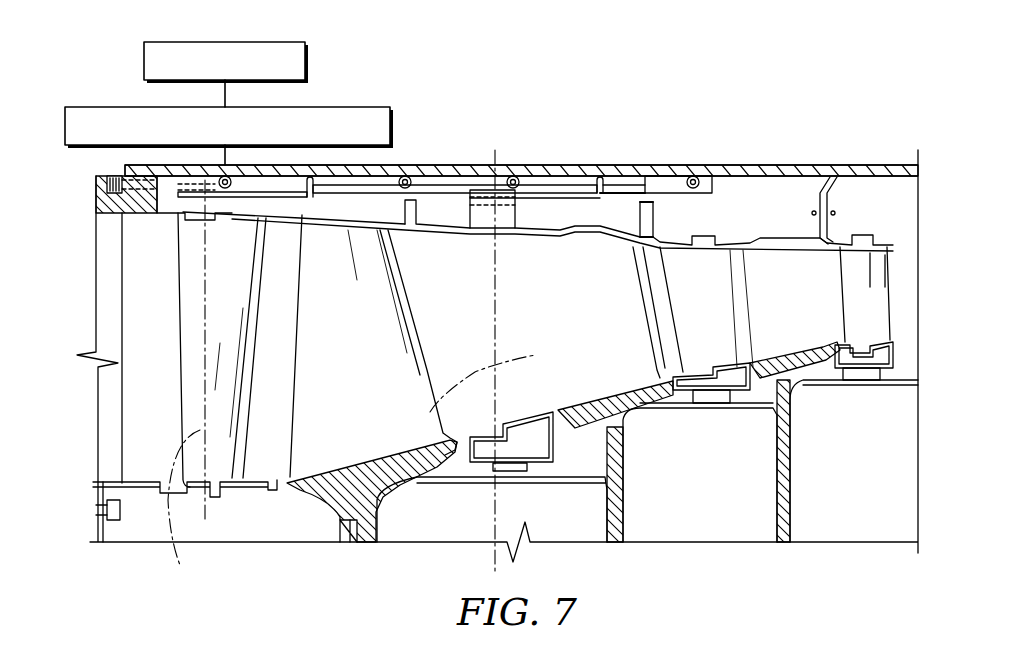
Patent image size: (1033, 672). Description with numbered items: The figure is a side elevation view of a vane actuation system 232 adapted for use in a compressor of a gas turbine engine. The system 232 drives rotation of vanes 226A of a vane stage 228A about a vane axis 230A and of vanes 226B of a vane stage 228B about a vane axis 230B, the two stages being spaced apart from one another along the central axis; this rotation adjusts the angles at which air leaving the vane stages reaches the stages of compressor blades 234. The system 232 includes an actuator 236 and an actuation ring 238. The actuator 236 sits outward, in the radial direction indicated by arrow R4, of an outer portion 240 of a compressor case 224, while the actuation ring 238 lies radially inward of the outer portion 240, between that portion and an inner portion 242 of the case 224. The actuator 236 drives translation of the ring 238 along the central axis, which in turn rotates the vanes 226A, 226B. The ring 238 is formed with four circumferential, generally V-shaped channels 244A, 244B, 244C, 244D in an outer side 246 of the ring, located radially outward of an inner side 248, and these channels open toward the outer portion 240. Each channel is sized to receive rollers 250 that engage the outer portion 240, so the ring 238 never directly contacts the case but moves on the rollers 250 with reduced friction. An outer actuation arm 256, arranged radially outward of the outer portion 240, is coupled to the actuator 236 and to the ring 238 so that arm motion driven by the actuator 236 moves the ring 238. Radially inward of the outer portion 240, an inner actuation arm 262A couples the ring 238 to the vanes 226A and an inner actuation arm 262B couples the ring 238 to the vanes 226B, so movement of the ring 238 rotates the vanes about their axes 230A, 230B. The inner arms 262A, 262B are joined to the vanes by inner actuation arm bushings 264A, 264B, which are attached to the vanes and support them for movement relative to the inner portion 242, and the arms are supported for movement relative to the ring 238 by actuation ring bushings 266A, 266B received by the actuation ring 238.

The compressor case 224 is at (823, 82).
The vane 226A is at (188, 338).
The vane 226B is at (507, 367).
The vane stage 228A is at (118, 413).
The vane stage 228B is at (605, 347).
The vane axis 230A is at (182, 511).
The vane axis 230B is at (427, 413).
The vane actuation system 232 is at (753, 77).
The compressor blades 234 is at (347, 387).
The actuator 236 is at (309, 62).
The actuation ring 238 is at (642, 172).
The outer portion of compressor case 240 is at (803, 163).
The inner portion of case 242 is at (871, 165).
The channel 244A is at (262, 200).
The channel 244B is at (425, 183).
The channel 244C is at (533, 183).
The channel 244D is at (705, 182).
The outer side of actuation ring 246 is at (617, 165).
The inner side of actuation ring 248 is at (667, 212).
The rollers 250 is at (405, 165).
The outer actuation arm 256 is at (363, 105).
The inner actuation arm 262A is at (207, 207).
The inner actuation arm 262B is at (544, 200).
The inner actuation arm bushing 264A is at (188, 212).
The inner actuation arm bushing 264B is at (495, 212).
The actuation ring bushing 266A is at (252, 183).
The second rotation direction 266B is at (610, 198).
The radial direction arrow R4 is at (388, 283).